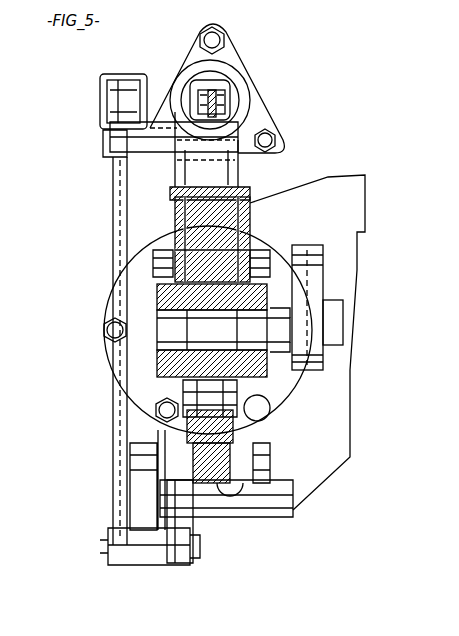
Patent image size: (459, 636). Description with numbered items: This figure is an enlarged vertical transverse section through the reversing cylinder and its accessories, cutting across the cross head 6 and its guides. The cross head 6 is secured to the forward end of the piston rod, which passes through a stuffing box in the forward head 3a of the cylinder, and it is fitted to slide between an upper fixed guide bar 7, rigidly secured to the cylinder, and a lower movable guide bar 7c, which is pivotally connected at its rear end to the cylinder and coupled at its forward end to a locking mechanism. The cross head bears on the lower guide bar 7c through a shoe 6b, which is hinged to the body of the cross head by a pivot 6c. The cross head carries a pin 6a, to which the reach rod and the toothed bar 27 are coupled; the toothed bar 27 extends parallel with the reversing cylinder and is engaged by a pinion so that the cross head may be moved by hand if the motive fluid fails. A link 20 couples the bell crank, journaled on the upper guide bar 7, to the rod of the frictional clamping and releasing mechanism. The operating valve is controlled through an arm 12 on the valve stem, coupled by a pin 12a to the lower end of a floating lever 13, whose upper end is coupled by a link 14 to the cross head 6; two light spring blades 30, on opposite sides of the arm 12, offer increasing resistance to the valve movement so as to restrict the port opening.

The forward head 3a is at (140, 366).
The cross head 6 is at (178, 287).
The pin 6a is at (223, 342).
The shoe 6b is at (265, 440).
The pivot 6c is at (252, 385).
The upper fixed guide bar 7 is at (215, 229).
The lower movable guide bar 7c is at (244, 490).
The arm 12 is at (128, 505).
The pin 12a is at (100, 545).
The floating lever 13 is at (118, 221).
The link 14 is at (110, 115).
The link 20 is at (236, 110).
The toothed bar 27 is at (312, 290).
The spring blades 30 is at (180, 522).